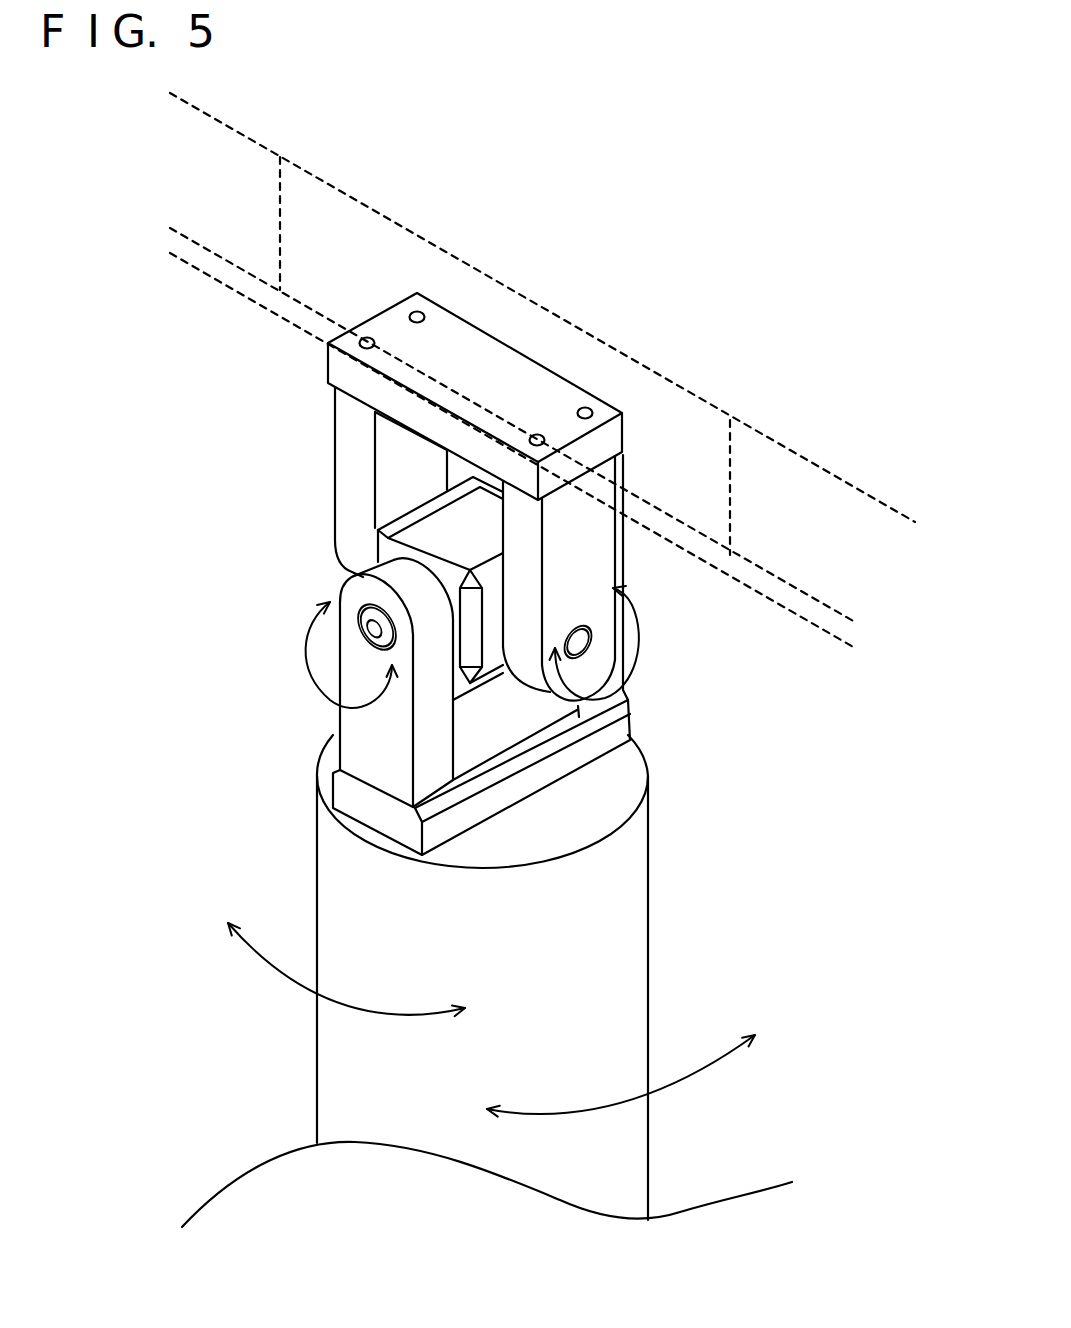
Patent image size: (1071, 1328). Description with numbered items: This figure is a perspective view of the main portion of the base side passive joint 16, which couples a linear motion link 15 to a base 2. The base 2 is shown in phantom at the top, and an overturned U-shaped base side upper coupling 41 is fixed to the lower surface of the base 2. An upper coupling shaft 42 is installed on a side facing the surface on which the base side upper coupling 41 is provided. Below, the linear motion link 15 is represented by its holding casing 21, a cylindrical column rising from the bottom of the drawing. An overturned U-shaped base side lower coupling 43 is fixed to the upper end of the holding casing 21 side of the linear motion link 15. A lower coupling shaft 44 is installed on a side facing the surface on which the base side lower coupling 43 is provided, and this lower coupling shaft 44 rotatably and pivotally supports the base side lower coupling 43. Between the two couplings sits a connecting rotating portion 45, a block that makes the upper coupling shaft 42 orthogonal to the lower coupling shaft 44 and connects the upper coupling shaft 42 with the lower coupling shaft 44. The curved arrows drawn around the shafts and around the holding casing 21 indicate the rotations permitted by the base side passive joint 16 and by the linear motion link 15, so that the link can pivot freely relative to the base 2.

The base 2 is at (435, 217).
The linear motion link 15 is at (285, 1075).
The base side passive joint 16 is at (275, 622).
The holding casing 21 is at (595, 942).
The base side upper coupling 41 is at (583, 538).
The upper coupling shaft 42 is at (580, 642).
The base side lower coupling 43 is at (598, 740).
The lower coupling shaft 44 is at (372, 632).
The connecting rotating portion 45 is at (450, 532).